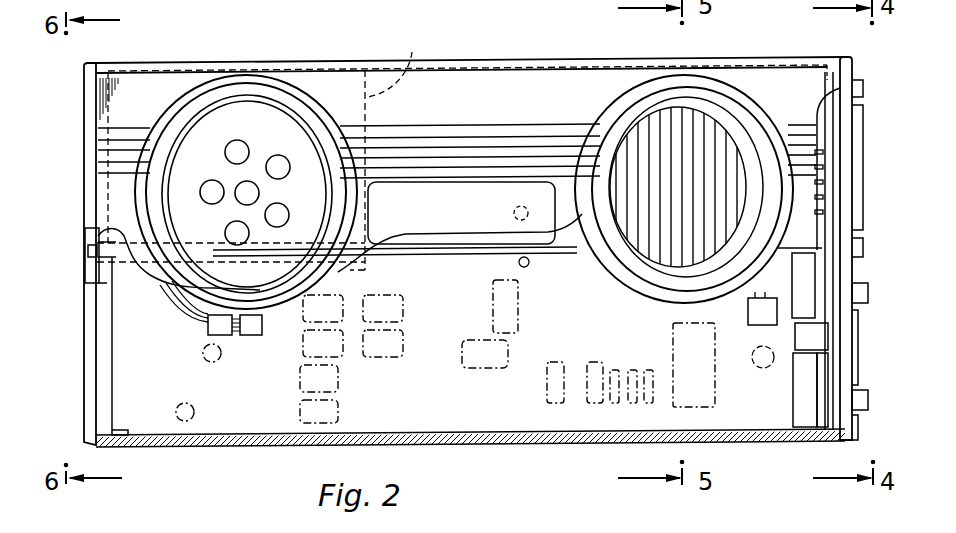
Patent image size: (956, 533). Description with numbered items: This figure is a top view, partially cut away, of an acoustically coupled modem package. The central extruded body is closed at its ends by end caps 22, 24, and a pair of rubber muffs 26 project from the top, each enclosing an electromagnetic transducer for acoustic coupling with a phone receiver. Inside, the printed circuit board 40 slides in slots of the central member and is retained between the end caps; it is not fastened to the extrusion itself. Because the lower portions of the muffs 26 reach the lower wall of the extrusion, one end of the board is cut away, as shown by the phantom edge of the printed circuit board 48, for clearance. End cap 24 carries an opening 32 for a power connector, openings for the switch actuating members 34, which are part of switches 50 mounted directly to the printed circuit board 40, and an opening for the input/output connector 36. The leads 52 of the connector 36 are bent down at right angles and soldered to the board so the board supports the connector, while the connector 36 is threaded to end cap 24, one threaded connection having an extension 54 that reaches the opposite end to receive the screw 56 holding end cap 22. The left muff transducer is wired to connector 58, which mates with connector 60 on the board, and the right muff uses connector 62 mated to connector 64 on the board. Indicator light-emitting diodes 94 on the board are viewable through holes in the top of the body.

The end cap 22 is at (90, 95).
The end cap 24 is at (852, 72).
The rubber muffs 26 is at (300, 93).
The opening for a power connector 32 is at (798, 336).
The switch actuating members 34 is at (862, 294).
The connector 36 is at (860, 160).
The printed circuit board 40 is at (125, 373).
The edge of the printed circuit board 48 is at (412, 52).
The switches 50 is at (800, 405).
The leads 52 is at (815, 192).
The extension 54 is at (577, 250).
The screw 56 is at (88, 244).
The connector 58 is at (215, 338).
The connector 60 is at (250, 335).
The connector 62 is at (757, 290).
The connector 64 is at (752, 353).
The indicator light-emitting diodes 94 is at (516, 218).